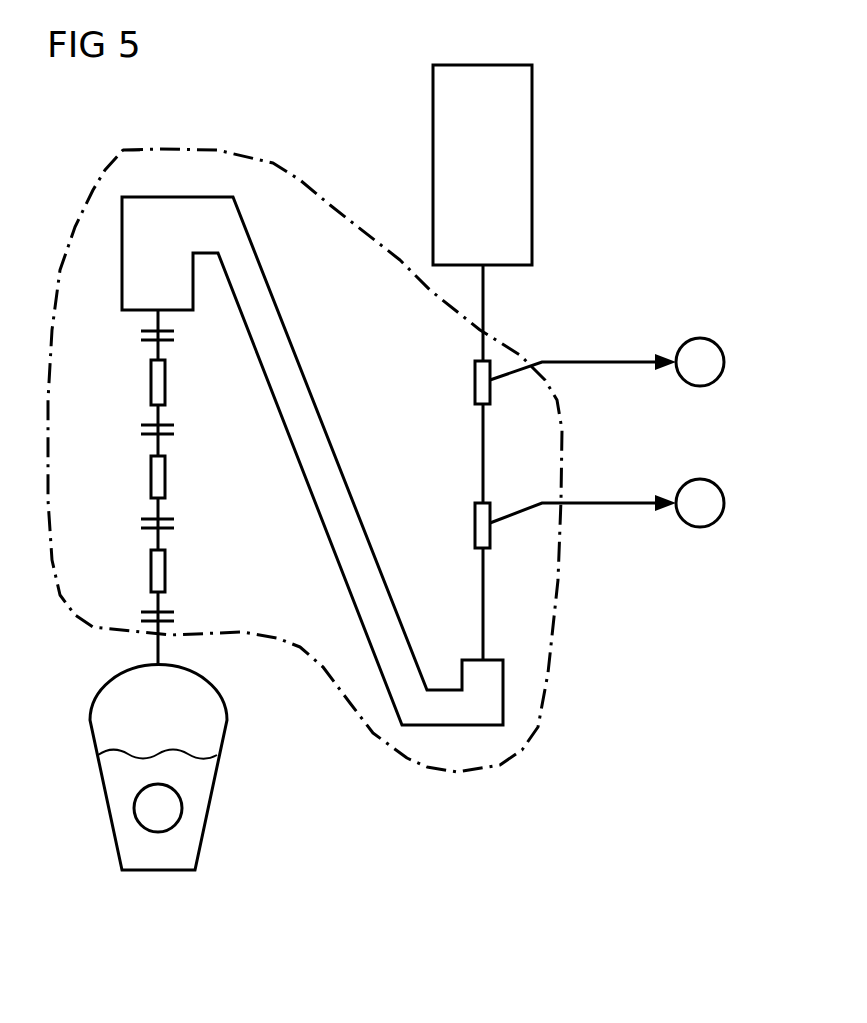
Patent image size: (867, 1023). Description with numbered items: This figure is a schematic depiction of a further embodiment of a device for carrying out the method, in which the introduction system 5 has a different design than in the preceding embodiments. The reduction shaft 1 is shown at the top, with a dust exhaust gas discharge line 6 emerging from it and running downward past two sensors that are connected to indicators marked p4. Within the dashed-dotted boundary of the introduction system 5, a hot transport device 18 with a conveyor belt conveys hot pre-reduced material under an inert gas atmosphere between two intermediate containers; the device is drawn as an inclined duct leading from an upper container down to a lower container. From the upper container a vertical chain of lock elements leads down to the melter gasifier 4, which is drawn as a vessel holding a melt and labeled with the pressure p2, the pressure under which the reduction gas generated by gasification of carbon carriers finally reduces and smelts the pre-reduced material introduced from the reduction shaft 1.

The reduction shaft 1 is at (532, 165).
The melter gasifier 4 is at (208, 807).
The introduction system 5 is at (202, 150).
The dust exhaust gas discharge line 6 is at (483, 285).
The hot transport device 18 is at (320, 442).
The pressure p2 is at (158, 808).
The pressure p4 is at (700, 432).